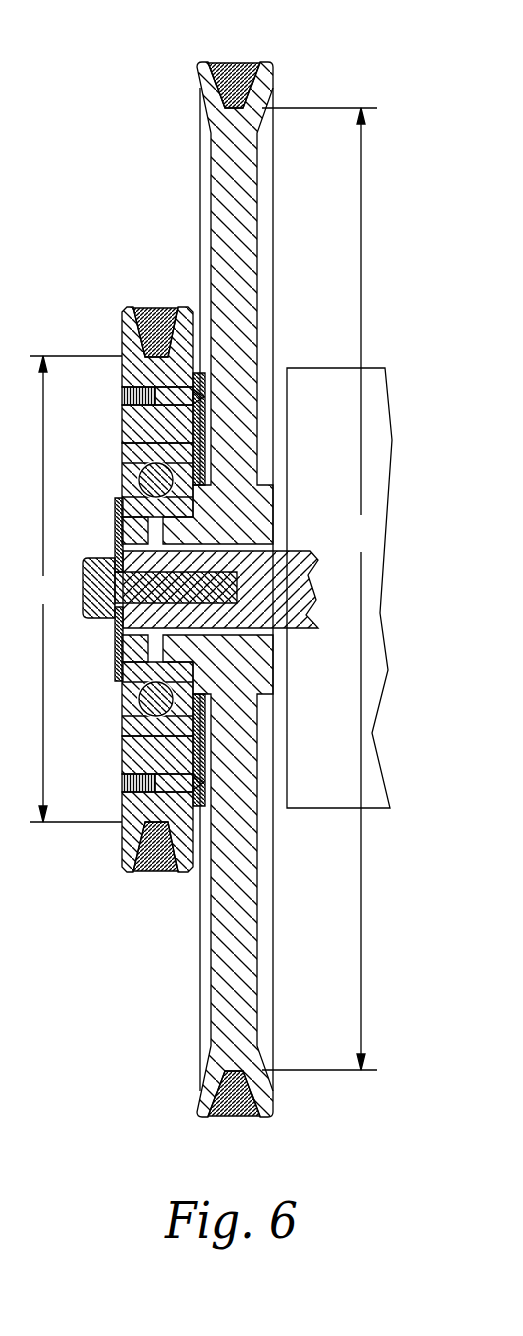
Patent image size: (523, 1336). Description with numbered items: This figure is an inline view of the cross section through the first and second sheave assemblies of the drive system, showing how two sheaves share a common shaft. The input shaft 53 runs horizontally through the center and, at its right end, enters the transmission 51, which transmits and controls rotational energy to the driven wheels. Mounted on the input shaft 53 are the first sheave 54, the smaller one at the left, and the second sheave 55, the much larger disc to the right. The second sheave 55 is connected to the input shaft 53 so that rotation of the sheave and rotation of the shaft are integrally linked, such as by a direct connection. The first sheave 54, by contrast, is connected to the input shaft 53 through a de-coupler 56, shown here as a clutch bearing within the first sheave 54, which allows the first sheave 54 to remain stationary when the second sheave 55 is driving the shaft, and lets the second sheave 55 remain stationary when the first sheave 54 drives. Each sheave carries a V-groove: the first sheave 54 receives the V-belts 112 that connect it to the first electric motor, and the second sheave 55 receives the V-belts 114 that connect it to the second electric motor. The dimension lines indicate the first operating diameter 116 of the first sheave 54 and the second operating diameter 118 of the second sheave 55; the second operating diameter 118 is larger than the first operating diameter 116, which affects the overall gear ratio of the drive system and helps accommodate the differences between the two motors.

The transmission 51 is at (330, 367).
The input shaft 53 is at (302, 628).
The first sheave 54 is at (122, 333).
The second sheave 55 is at (245, 230).
The de-coupler 56 is at (121, 486).
The V-belts 112 is at (148, 306).
The V-belts 114 is at (228, 66).
The first operating diameter 116 is at (72, 589).
The second operating diameter 118 is at (320, 589).